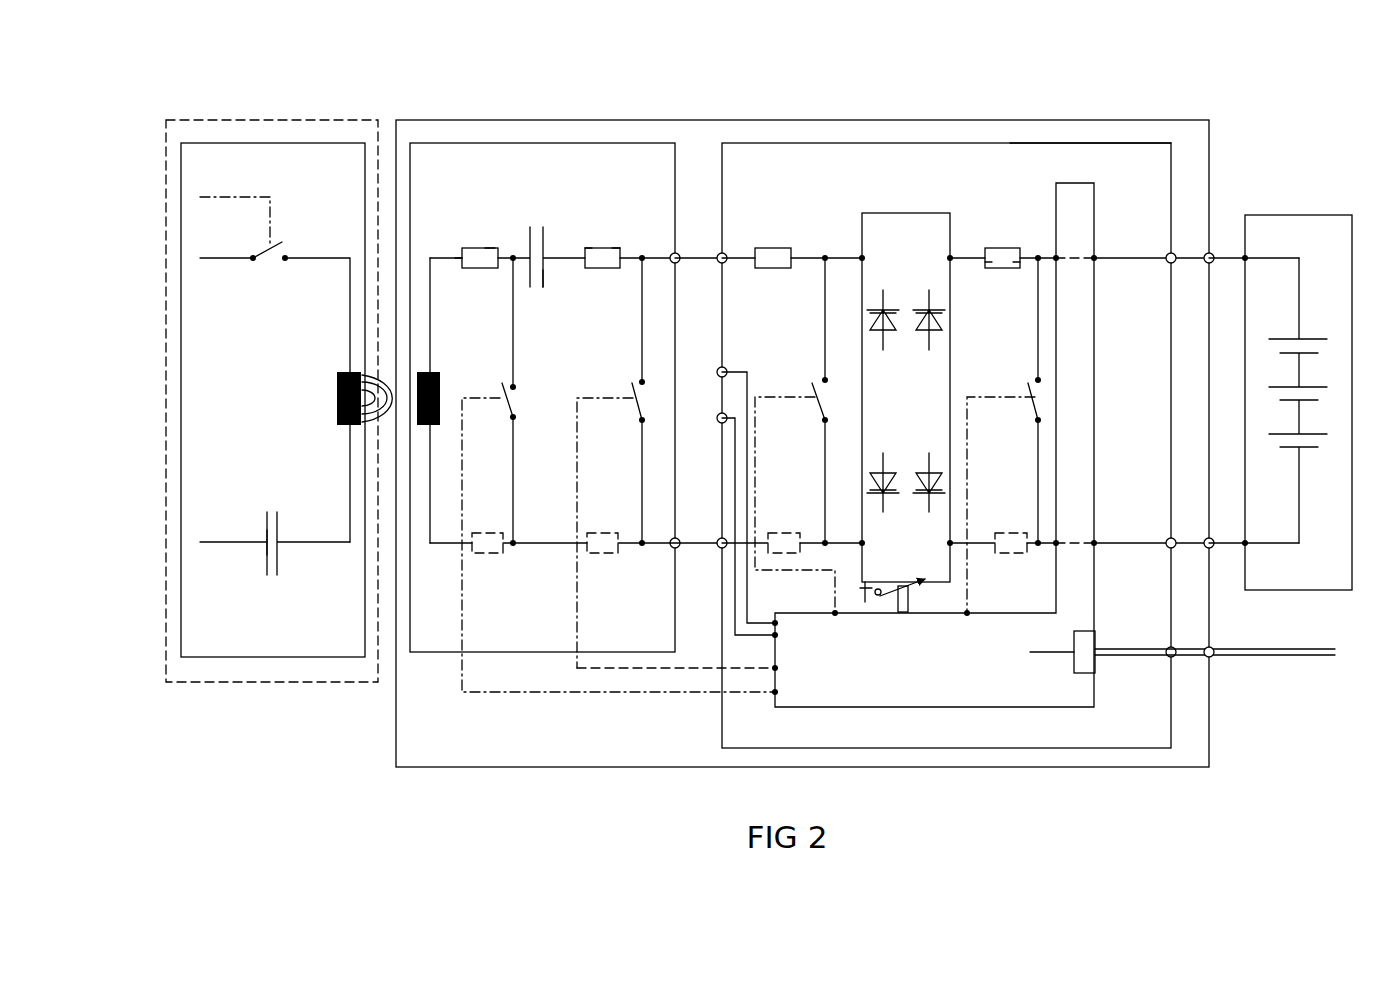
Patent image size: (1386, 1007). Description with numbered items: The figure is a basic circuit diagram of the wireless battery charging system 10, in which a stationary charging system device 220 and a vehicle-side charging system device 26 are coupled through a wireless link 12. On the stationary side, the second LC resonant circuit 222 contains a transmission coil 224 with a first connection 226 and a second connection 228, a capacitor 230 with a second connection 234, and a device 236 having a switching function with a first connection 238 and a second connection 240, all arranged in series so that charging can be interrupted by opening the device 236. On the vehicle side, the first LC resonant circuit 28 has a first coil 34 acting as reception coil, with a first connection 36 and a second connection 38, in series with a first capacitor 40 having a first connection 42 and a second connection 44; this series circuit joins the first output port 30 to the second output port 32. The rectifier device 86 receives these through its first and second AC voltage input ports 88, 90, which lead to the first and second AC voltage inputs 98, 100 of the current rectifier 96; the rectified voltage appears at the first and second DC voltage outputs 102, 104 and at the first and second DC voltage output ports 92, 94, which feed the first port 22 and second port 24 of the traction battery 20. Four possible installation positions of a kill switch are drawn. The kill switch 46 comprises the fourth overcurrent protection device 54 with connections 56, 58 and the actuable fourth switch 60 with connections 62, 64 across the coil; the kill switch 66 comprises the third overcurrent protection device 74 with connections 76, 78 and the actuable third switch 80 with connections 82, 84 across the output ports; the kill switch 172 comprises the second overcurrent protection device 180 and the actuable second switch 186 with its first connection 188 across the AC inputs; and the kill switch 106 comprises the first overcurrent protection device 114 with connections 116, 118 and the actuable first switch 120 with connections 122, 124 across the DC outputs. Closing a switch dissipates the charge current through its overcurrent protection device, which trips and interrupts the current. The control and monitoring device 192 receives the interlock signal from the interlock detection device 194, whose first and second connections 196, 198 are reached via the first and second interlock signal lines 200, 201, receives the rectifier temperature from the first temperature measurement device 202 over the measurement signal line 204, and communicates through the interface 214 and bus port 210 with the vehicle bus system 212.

The battery charging system 10 is at (690, 108).
The wireless link 12 is at (392, 374).
The traction battery 20 is at (1290, 211).
The first port 22 is at (1248, 257).
The second port 24 is at (1248, 545).
The vehicle-side charging system device 26 is at (893, 120).
The first LC resonant circuit 28 is at (580, 143).
The first output port 30 is at (679, 256).
The second output port 32 is at (672, 547).
The first coil 34 is at (445, 398).
The first connection 36 is at (440, 372).
The second connection 38 is at (437, 428).
The first capacitor 40 is at (545, 224).
The first connection 42 is at (514, 262).
The second connection 44 is at (545, 288).
The kill switch 46 is at (518, 247).
The fourth overcurrent protection device 54 is at (463, 246).
The first connection 56 is at (462, 257).
The second connection 58 is at (490, 248).
The actuable fourth switch 60 is at (527, 399).
The first connection 62 is at (517, 385).
The second connection 64 is at (515, 421).
The kill switch 66 is at (642, 253).
The third overcurrent protection device 74 is at (597, 246).
The first connection 76 is at (588, 248).
The second connection 78 is at (618, 248).
The actuable third switch 80 is at (644, 380).
The first connection 82 is at (641, 380).
The second connection 84 is at (640, 423).
The rectifier device 86 is at (1010, 143).
The first AC voltage input port 88 is at (726, 256).
The second AC voltage input port 90 is at (720, 548).
The first DC voltage output port 92 is at (1167, 256).
The second DC voltage output port 94 is at (1167, 542).
The current rectifier 96 is at (906, 213).
The first AC voltage input 98 is at (860, 256).
The second AC voltage input 100 is at (861, 541).
The first DC voltage output 102 is at (984, 257).
The second DC voltage output 104 is at (953, 542).
The kill switch 106 is at (1033, 246).
The first overcurrent protection device 114 is at (1013, 245).
The first connection 116 is at (1000, 270).
The second connection 118 is at (1023, 270).
The actuable first switch 120 is at (1043, 398).
The first connection 122 is at (1035, 380).
The second connection 124 is at (1036, 423).
The kill switch 172 is at (823, 256).
The second overcurrent protection device 180 is at (770, 245).
The actuable second switch 186 is at (830, 396).
The first connection 188 is at (824, 378).
The control and monitoring device 192 is at (940, 707).
The interlock detection device 194 is at (719, 404).
The first connection 196 is at (726, 368).
The second connection 198 is at (727, 416).
The first interlock signal line 200 is at (776, 650).
The second interlock signal line 201 is at (774, 625).
The first temperature measurement device 202 is at (918, 598).
The measurement signal line 204 is at (908, 613).
The bus port 210 is at (1166, 648).
The vehicle bus system 212 is at (1268, 658).
The interface 214 is at (1074, 668).
The stationary charging system device 220 is at (264, 120).
The second LC resonant circuit 222 is at (320, 143).
The transmission coil 224 is at (334, 415).
The first connection 226 is at (343, 374).
The second connection 228 is at (346, 428).
The capacitor 230 is at (265, 511).
The second connection 234 is at (265, 546).
The device having switching function 236 is at (277, 236).
The first connection 238 is at (252, 262).
The second connection 240 is at (286, 262).